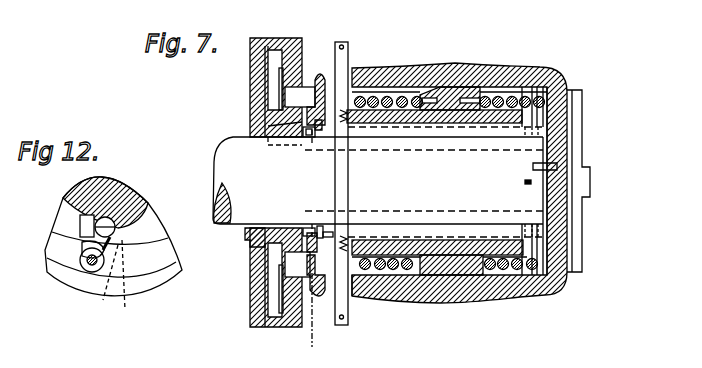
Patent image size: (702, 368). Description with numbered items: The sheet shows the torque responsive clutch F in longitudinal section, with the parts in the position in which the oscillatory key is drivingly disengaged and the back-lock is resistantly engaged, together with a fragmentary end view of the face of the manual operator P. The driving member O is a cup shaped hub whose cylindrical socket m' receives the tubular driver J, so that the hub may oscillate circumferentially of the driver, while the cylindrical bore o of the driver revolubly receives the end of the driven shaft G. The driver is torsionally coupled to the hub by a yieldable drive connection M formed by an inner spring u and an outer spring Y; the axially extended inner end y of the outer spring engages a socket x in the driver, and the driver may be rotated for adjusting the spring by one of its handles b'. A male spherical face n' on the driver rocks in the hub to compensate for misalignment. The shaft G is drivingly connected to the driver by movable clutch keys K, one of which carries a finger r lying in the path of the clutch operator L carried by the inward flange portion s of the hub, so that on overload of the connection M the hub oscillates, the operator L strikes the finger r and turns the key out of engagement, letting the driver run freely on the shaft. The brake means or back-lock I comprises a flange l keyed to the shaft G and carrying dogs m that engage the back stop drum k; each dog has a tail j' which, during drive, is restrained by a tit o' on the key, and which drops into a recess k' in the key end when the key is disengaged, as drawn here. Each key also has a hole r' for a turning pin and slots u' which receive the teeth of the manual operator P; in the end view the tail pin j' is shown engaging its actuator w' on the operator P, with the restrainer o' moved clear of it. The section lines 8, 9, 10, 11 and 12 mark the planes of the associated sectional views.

In FIG. 7, the driven shaft G is at (378, 183).
In FIG. 12, the driven shaft G is at (120, 205).
In FIG. 7, the torque responsive clutch F is at (459, 171).
In FIG. 7, the brake means or back-lock I is at (284, 327).
In FIG. 7, the back stop drum k is at (291, 214).
In FIG. 7, the actuator w' is at (255, 186).
In FIG. 12, the actuator w' is at (101, 283).
In FIG. 7, the dog m is at (263, 178).
In FIG. 7, the manual operator P is at (318, 300).
In FIG. 12, the manual operator P is at (143, 292).
In FIG. 7, the slots u' is at (305, 144).
In FIG. 12, the slots u' is at (76, 252).
In FIG. 7, the tit o' is at (300, 213).
In FIG. 7, the recess k' is at (326, 213).
In FIG. 7, the hole r' is at (340, 214).
In FIG. 7, the tail j' is at (252, 171).
In FIG. 12, the tail j' is at (119, 284).
In FIG. 7, the flange l is at (307, 320).
In FIG. 7, the handle b' is at (351, 193).
In FIG. 7, the inner wall or flange portion s is at (552, 181).
In FIG. 7, the yieldable drive connection M is at (473, 110).
In FIG. 7, the socket x is at (472, 83).
In FIG. 7, the driver member J is at (432, 255).
In FIG. 7, the outer spring Y is at (403, 108).
In FIG. 7, the key K is at (490, 130).
In FIG. 12, the key K is at (118, 242).
In FIG. 7, the inner end of outer spring y is at (410, 268).
In FIG. 7, the male face n' is at (494, 245).
In FIG. 7, the cylindrical bore or socket m' is at (369, 217).
In FIG. 7, the driving member O is at (457, 277).
In FIG. 7, the clutch operator L is at (537, 178).
In FIG. 7, the finger r is at (515, 172).
In FIG. 7, the inner spring u is at (526, 161).
In FIG. 12, the cylindrical bore o is at (122, 226).
In FIG. 7, the section line 8— 8 is at (245, 100).
In FIG. 7, the section line 9— 9 is at (327, 57).
In FIG. 7, the section line 10— 10 is at (541, 66).
In FIG. 7, the section line 11— 11 is at (333, 60).
In FIG. 7, the section line 12— 12 is at (317, 178).